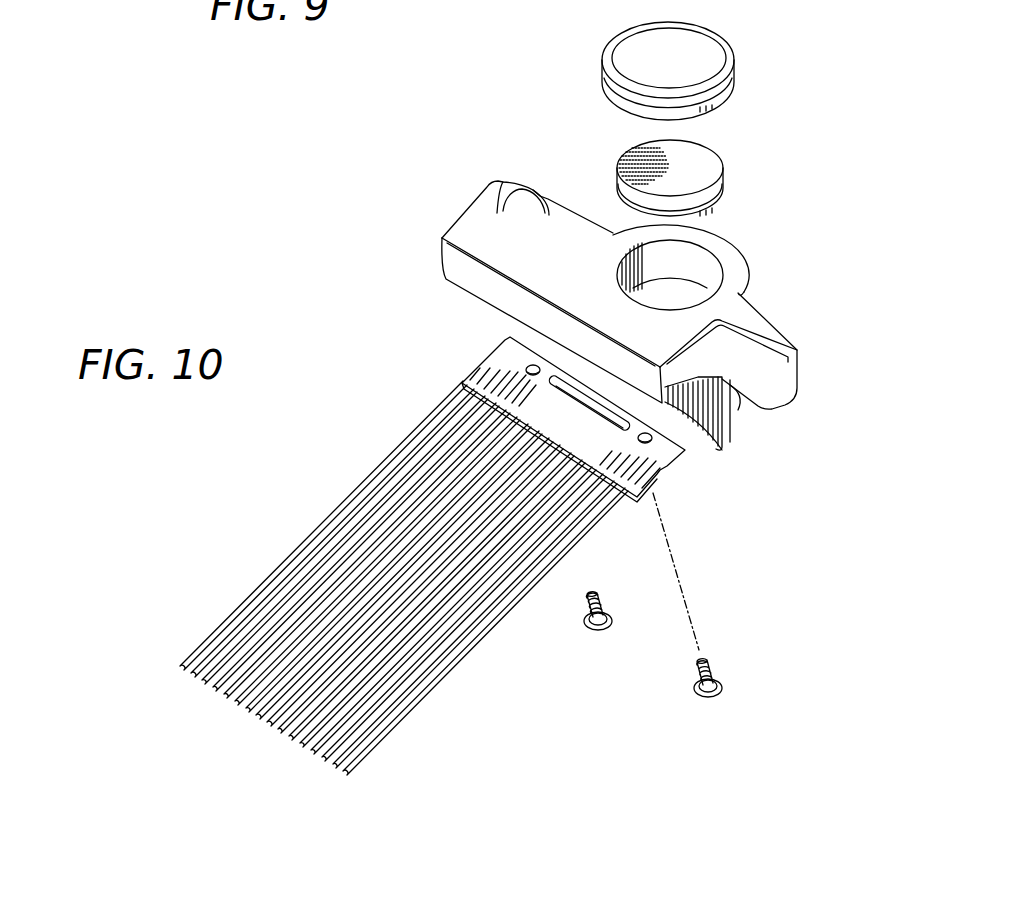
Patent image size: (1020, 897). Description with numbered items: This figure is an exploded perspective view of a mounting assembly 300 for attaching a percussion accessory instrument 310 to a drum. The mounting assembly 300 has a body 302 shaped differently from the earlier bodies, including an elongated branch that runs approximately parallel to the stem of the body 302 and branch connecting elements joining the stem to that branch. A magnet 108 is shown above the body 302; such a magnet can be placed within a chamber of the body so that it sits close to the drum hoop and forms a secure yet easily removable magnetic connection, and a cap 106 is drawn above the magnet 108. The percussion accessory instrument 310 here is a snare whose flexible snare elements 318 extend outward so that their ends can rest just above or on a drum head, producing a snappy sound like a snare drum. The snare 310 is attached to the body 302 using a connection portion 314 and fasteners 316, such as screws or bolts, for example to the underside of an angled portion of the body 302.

The cap 106 is at (710, 40).
The magnet 108 is at (710, 168).
The mounting assembly 300 is at (348, 265).
The body 302 is at (503, 188).
The percussion accessory instrument 310 is at (371, 466).
The connection portion 314 is at (502, 355).
The fasteners 316 is at (697, 687).
The snare elements 318 is at (250, 596).